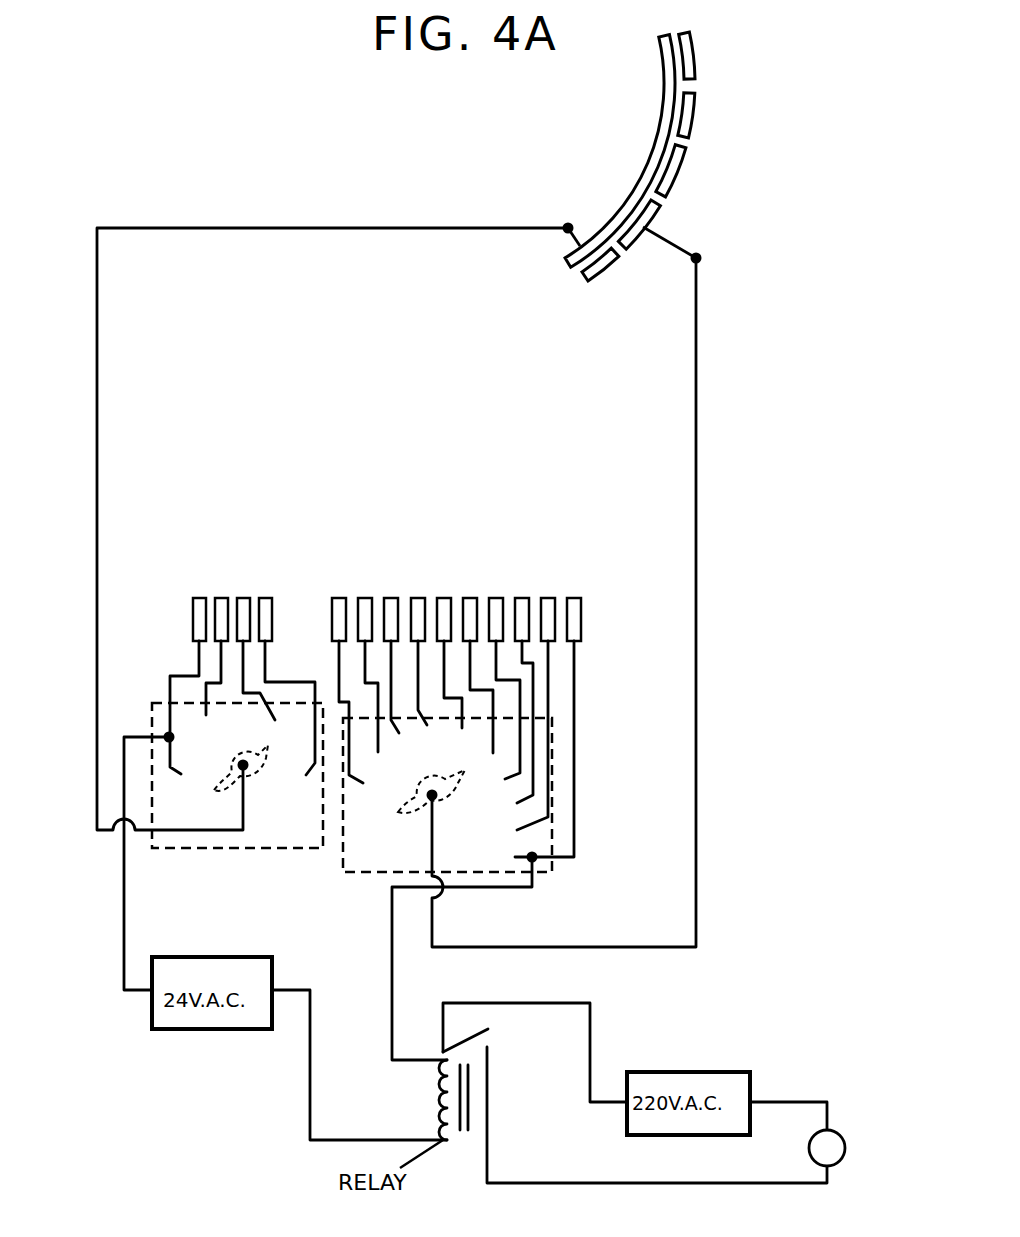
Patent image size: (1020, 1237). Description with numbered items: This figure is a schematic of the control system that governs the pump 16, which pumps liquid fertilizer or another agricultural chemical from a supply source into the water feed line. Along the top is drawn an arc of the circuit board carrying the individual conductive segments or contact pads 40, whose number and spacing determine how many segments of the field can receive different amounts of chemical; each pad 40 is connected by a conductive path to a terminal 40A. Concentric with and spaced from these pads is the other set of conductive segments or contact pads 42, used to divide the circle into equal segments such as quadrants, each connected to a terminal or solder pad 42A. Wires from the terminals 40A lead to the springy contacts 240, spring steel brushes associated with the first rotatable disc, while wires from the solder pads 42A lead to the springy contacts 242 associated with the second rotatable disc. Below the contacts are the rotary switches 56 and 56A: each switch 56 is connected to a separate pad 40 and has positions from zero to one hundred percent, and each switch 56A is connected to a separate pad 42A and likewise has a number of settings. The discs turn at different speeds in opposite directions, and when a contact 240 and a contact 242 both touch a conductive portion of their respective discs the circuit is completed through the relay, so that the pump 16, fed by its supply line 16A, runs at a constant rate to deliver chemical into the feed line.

The contact pads 42 is at (655, 148).
The contact pads 40 is at (680, 172).
The terminal or solder pad 42A is at (568, 222).
The terminal 40A is at (696, 252).
The springy contacts 242 is at (265, 597).
The springy contacts 240 is at (574, 597).
The rotary switch 56A is at (150, 720).
The rotary switch 56 is at (552, 748).
The lamp supply wire 16A is at (785, 1100).
The pump 16 is at (840, 1124).